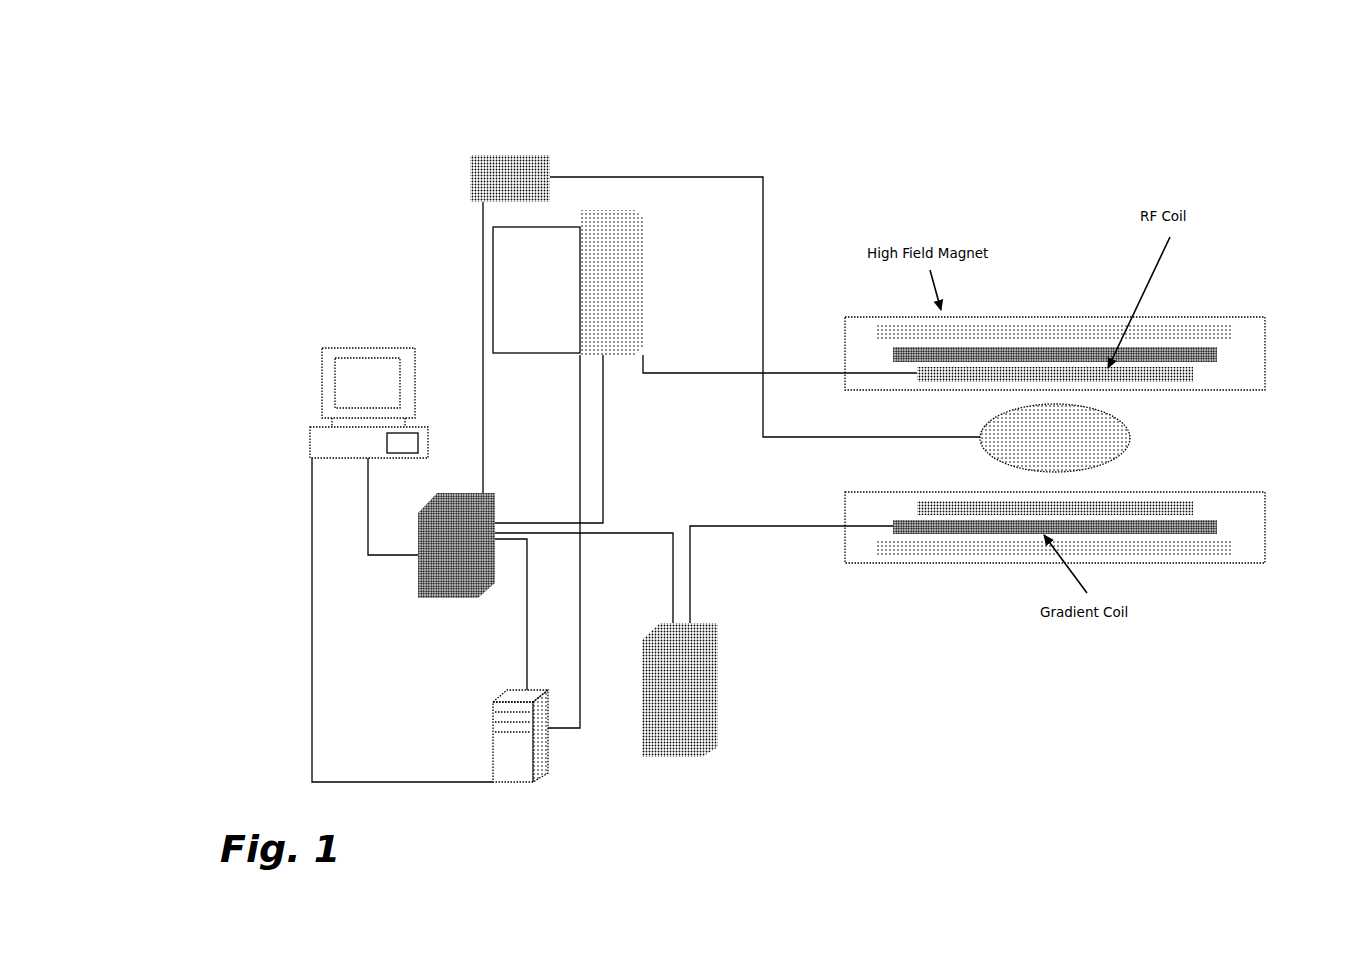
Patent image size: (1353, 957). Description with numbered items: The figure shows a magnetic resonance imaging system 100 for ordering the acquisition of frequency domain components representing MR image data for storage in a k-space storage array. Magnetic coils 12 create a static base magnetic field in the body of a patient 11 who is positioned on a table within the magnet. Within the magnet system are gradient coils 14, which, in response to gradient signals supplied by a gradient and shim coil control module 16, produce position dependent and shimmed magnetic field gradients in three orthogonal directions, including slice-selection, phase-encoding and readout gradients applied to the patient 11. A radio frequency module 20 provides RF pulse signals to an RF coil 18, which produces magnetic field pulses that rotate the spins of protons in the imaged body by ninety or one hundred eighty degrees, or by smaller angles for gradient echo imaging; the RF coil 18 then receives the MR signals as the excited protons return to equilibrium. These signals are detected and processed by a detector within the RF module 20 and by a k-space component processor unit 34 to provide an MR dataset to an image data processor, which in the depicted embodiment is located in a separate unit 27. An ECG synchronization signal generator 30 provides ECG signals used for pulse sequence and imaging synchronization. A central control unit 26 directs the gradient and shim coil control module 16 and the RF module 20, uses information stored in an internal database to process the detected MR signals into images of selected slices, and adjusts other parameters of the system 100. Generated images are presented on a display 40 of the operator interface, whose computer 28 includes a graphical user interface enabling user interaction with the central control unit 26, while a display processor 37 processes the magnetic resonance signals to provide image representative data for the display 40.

The system 100 is at (215, 107).
The ECG synchronization signal generator 30 is at (468, 178).
The k-space component processor unit 34 is at (493, 272).
The radio frequency (RF) module 20 is at (628, 224).
The display 40 is at (373, 385).
The computer 28 is at (310, 436).
The display processor 37 is at (397, 447).
The central control unit 26 is at (440, 568).
The separate unit 27 is at (493, 732).
The gradient and shim coil control module 16 is at (710, 648).
The magnetic coils 12 is at (1187, 333).
The gradient coils 14 is at (1217, 355).
The RF coil 18 is at (1193, 373).
The patient 11 is at (1105, 445).